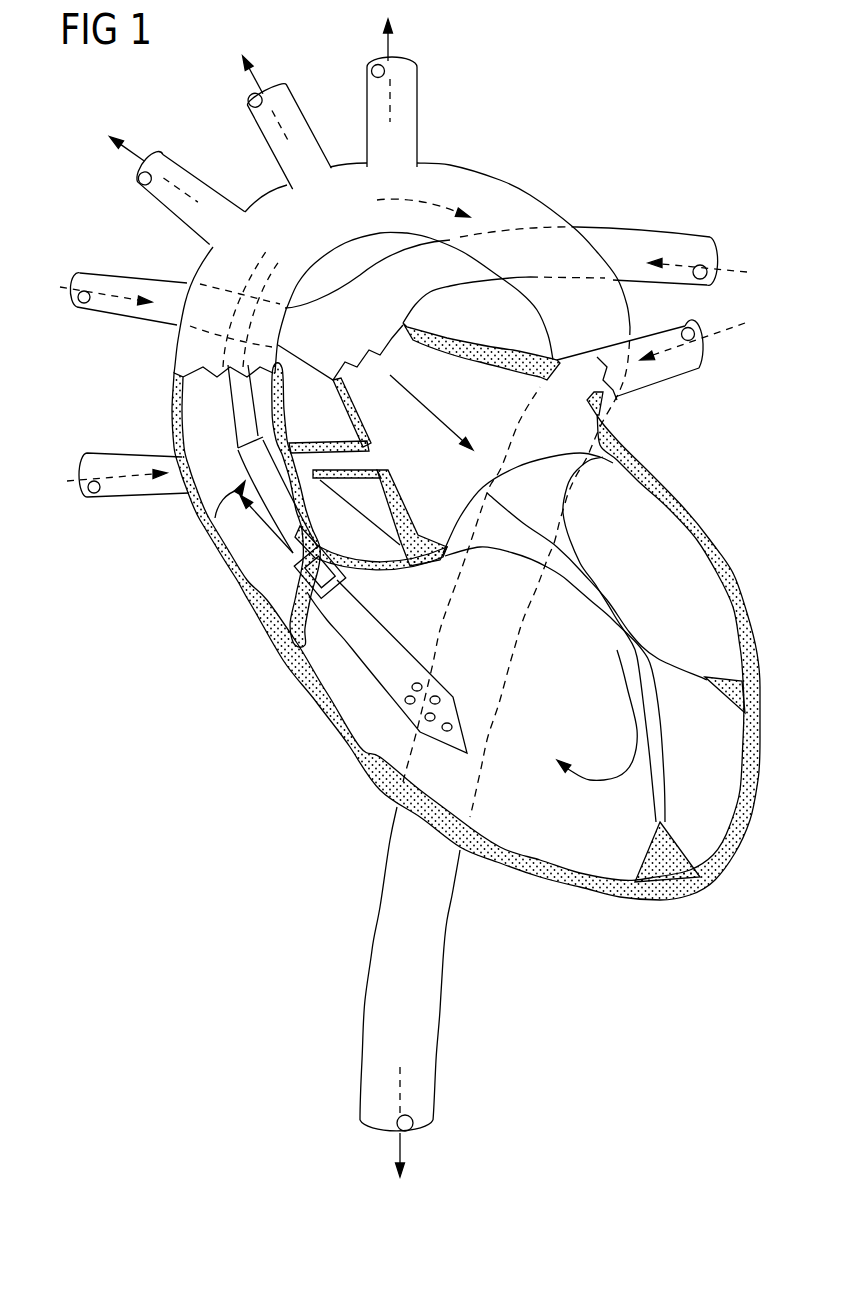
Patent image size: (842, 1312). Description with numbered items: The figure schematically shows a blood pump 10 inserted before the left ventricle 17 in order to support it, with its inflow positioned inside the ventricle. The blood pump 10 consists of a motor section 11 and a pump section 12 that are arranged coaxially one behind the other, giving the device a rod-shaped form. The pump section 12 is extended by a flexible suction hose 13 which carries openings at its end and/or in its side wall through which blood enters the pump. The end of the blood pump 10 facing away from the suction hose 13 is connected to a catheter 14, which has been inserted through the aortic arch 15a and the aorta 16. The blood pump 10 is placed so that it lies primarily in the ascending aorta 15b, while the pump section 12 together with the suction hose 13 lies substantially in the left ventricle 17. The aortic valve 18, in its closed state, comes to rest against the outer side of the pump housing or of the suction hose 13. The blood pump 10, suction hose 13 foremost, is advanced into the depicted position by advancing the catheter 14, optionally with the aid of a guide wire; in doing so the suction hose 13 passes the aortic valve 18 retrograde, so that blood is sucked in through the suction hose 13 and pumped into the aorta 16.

The blood pump 10 is at (207, 538).
The motor section 11 is at (258, 477).
The pump section 12 is at (298, 560).
The flexible suction hose 13 is at (385, 625).
The catheter 14 is at (243, 430).
The aortic arch 15a is at (455, 177).
The ascending aorta 15b is at (186, 507).
The aorta 16 is at (433, 1017).
The left ventricle 17 is at (707, 819).
The aortic valve 18 is at (297, 593).